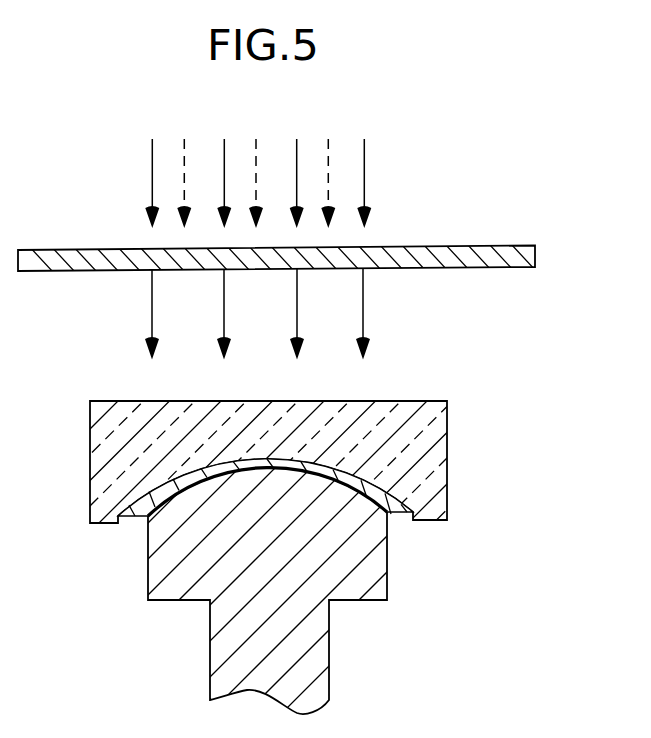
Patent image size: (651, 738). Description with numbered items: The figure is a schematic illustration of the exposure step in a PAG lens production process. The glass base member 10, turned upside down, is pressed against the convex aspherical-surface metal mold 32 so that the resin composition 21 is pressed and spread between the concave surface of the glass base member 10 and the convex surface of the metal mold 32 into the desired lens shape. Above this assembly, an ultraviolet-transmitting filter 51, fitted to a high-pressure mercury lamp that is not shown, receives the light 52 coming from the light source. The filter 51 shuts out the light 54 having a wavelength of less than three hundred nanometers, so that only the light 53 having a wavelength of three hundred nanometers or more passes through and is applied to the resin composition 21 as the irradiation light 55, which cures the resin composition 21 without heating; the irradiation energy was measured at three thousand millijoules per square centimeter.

The glass base member 10 is at (447, 430).
The resin composition 21 is at (403, 514).
The convex aspherical-surface metal mold 32 is at (338, 562).
The ultraviolet-transmitting filter 51 is at (535, 255).
The light from the light source 52 is at (319, 163).
The light with a wavelength of 300 nm or more 53 is at (364, 160).
The light with a wavelength of less than 300 nm 54 is at (328, 139).
The irradiation light 55 is at (363, 296).